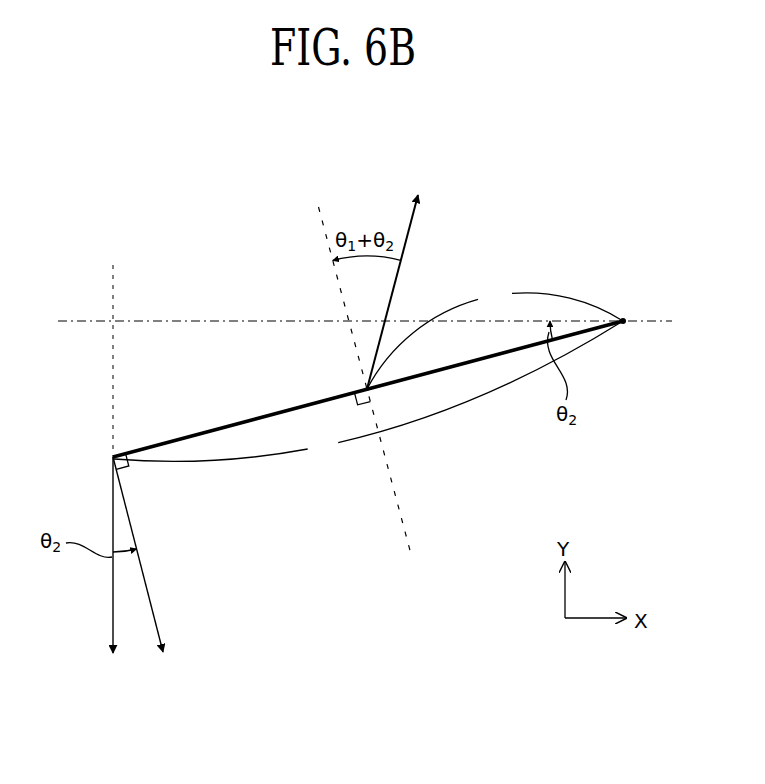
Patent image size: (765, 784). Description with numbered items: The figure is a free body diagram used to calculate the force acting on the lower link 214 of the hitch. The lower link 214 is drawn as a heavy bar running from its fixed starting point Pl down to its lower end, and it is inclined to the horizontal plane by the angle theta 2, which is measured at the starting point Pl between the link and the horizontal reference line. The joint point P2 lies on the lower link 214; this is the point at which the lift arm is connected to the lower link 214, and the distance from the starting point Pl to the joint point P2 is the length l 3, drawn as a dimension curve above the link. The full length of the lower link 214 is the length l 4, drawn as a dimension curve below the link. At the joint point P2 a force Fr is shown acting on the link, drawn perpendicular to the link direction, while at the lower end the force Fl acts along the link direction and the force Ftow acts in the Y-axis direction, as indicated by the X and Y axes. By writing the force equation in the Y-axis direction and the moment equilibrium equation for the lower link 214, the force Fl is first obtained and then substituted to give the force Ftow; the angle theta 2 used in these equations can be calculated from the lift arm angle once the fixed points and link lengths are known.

The lower link 214 is at (237, 420).
The point P2 (pivot point) 2 is at (353, 379).
The length l3 3 is at (495, 337).
The length l4 4 is at (368, 392).
The joint point P2 is at (367, 389).
The starting point Pl is at (627, 337).
The force Fr is at (397, 278).
The force acting on the lower link in the Y-axis direction Ftow is at (112, 572).
The force acting on the lower link Fl is at (149, 571).